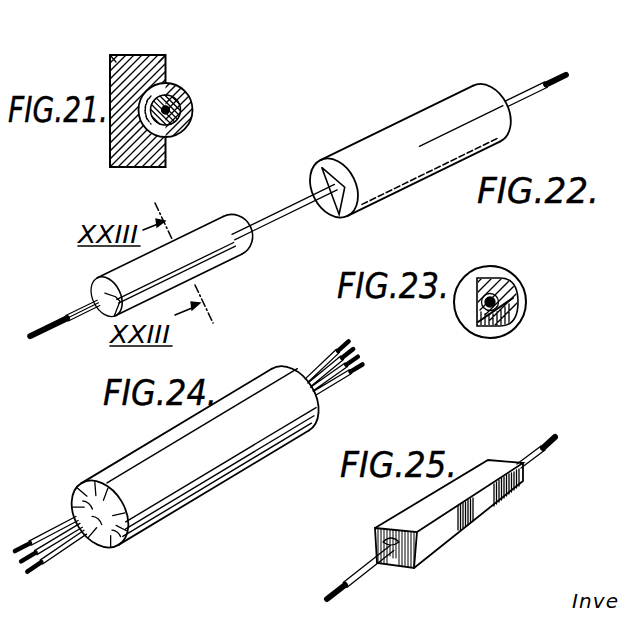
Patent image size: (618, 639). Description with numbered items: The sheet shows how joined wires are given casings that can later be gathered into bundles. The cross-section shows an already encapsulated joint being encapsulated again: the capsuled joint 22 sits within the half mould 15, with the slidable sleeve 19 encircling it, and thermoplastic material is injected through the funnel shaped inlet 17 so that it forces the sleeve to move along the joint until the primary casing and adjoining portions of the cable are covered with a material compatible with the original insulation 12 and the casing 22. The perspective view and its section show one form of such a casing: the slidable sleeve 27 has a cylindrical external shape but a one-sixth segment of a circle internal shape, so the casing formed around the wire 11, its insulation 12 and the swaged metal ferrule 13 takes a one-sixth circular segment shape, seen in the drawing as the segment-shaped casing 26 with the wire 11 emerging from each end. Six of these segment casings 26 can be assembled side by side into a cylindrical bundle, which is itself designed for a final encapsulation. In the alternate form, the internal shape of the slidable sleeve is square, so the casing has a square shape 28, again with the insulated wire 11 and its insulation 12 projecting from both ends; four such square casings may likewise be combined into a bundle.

In FIG. 21, the wire 11 is at (179, 131).
In FIG. 22, the wire 11 is at (548, 82).
In FIG. 23, the wire 11 is at (489, 318).
In FIG. 24, the wire 11 is at (37, 567).
In FIG. 25, the wire 11 is at (332, 600).
In FIG. 22, the insulation 12 is at (507, 97).
In FIG. 24, the insulation 12 is at (82, 543).
In FIG. 25, the insulation 12 is at (374, 569).
In FIG. 23, the metal ferrule 13 is at (500, 313).
In FIG. 21, the half mould 15 is at (112, 55).
In FIG. 21, the funnel shaped inlet 17 is at (167, 54).
In FIG. 21, the slidable sleeve 19 is at (187, 95).
In FIG. 21, the capsuled joint 22 is at (182, 111).
In FIG. 22, the slotted ferrule 26 is at (212, 232).
In FIG. 23, the slotted ferrule 26 is at (505, 296).
In FIG. 24, the slotted ferrule 26 is at (110, 486).
In FIG. 22, the slidable sleeve 27 is at (373, 140).
In FIG. 23, the slidable sleeve 27 is at (505, 276).
In FIG. 25, the square casing 28 is at (482, 509).